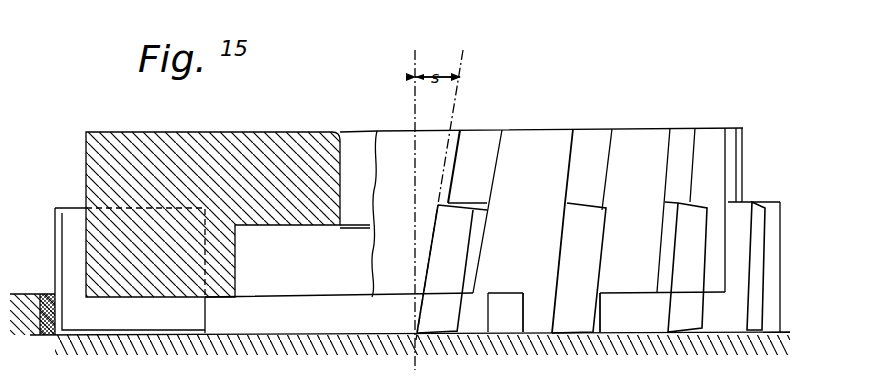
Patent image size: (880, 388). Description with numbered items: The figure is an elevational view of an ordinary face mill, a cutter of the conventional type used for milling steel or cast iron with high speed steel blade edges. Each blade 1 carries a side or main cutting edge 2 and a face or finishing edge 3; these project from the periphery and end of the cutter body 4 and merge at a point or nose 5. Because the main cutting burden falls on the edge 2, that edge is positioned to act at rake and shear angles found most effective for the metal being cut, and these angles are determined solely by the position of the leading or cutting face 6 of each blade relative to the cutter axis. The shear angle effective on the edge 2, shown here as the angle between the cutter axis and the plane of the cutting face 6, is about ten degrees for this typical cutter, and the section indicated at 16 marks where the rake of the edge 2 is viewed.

The blade 1 is at (69, 211).
The side or main cutting edge 2 is at (53, 262).
The face or finishing edge 3 is at (88, 337).
The cutter body 4 is at (288, 143).
The point or nose 5 is at (55, 337).
The leading or cutting face 6 is at (548, 307).
The section line indicator 16 is at (53, 210).